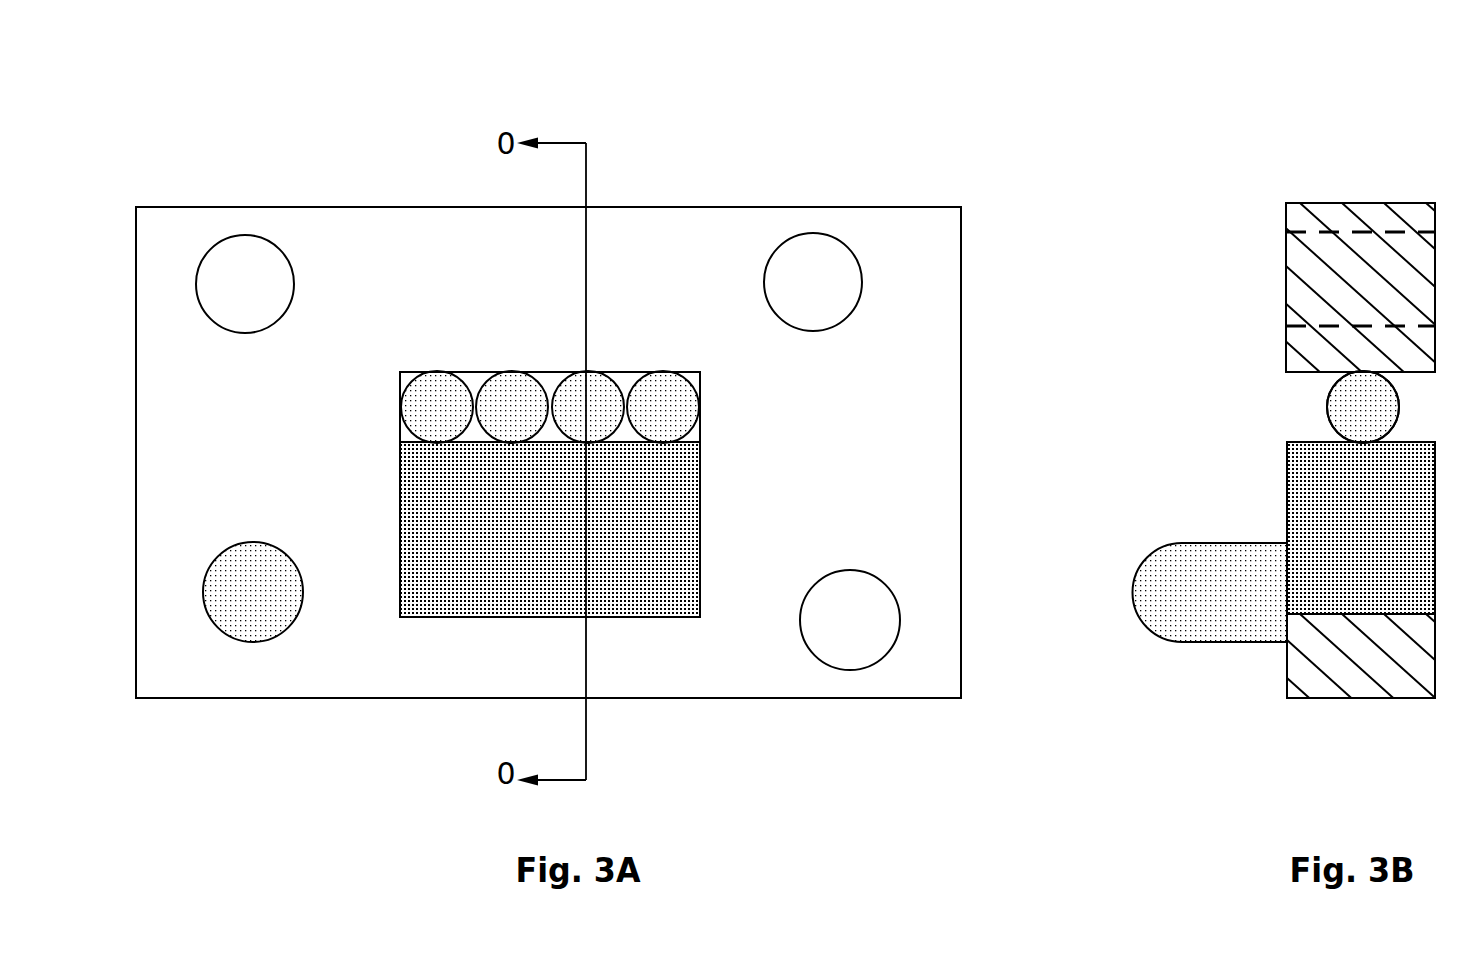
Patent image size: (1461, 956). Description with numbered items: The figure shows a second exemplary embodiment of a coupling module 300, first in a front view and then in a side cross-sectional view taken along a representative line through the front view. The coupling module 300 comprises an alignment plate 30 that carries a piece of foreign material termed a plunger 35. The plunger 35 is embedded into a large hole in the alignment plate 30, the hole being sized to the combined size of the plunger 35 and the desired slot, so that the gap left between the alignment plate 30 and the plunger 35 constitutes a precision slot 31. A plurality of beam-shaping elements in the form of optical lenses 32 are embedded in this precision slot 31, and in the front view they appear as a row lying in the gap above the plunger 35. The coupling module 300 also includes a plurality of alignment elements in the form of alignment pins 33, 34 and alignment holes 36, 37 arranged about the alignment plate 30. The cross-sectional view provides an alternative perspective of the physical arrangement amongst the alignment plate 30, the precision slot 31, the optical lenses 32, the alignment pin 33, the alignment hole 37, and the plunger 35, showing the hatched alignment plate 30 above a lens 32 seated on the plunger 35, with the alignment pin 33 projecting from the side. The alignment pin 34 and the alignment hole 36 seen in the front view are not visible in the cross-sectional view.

In FIG. 3A, the coupling module 300 is at (137, 58).
In FIG. 3A, the alignment plate 30 is at (377, 260).
In FIG. 3B, the alignment plate 30 is at (1342, 222).
In FIG. 3A, the precision slot 31 is at (405, 370).
In FIG. 3B, the precision slot 31 is at (1310, 390).
In FIG. 3A, the optical lenses 32 is at (433, 390).
In FIG. 3B, the optical lenses 32 is at (1358, 420).
In FIG. 3A, the alignment pin 33 is at (267, 617).
In FIG. 3B, the alignment pin 33 is at (1165, 598).
In FIG. 3A, the alignment pin 34 is at (815, 287).
In FIG. 3A, the plunger 35 is at (650, 577).
In FIG. 3B, the plunger 35 is at (1307, 590).
In FIG. 3A, the alignment hole 36 is at (847, 617).
In FIG. 3A, the alignment hole 37 is at (237, 282).
In FIG. 3B, the alignment hole 37 is at (1358, 323).